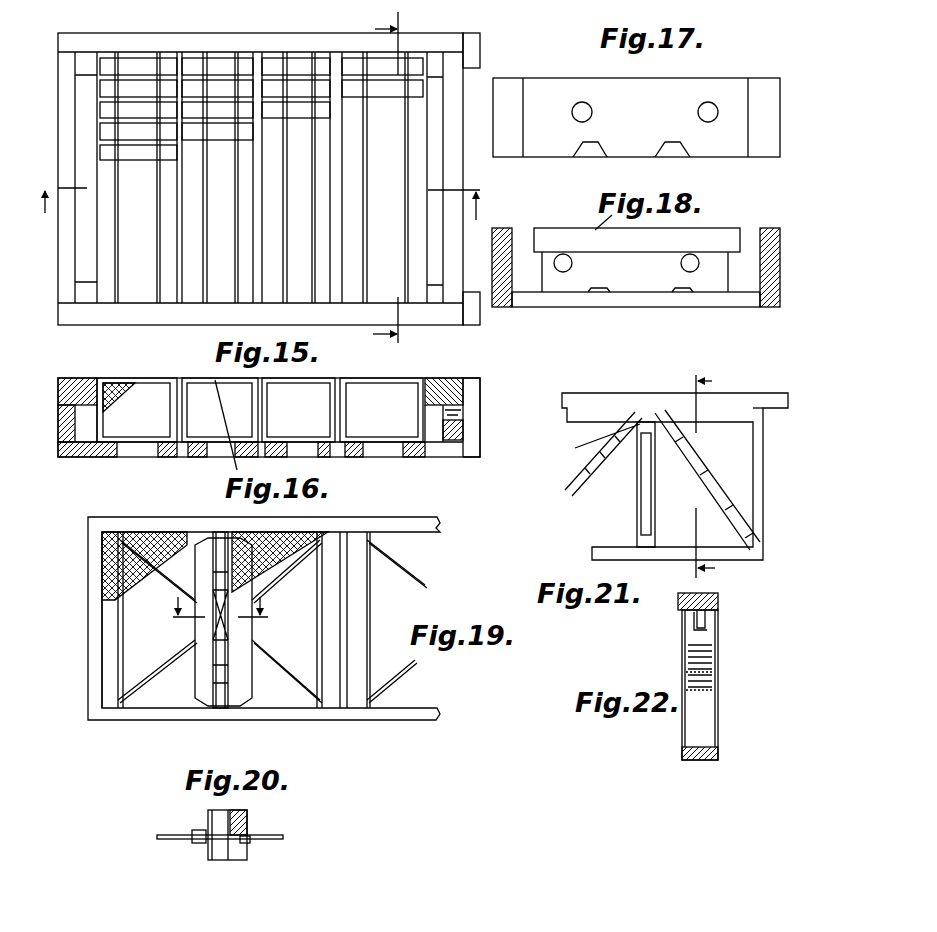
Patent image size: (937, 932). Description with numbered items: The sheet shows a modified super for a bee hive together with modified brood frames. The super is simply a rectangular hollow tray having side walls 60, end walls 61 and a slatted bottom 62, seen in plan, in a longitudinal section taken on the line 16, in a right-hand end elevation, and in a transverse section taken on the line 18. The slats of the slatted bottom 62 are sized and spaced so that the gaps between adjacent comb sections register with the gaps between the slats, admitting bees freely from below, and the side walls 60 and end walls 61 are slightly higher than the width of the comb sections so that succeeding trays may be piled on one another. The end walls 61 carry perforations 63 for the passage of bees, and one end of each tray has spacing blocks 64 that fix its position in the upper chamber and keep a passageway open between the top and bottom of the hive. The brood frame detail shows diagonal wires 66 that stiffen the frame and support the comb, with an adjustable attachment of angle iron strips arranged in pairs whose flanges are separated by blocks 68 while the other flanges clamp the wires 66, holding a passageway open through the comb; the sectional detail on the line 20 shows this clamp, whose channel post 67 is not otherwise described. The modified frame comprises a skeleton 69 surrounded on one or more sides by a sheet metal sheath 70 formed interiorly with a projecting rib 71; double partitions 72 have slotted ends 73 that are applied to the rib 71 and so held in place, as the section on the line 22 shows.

In FIG. 15, the side walls 60 is at (318, 40).
In FIG. 17, the side walls 60 is at (502, 137).
In FIG. 18, the side walls 60 is at (508, 228).
In FIG. 15, the end walls 61 is at (66, 94).
In FIG. 17, the end walls 61 is at (703, 84).
In FIG. 18, the end walls 61 is at (637, 260).
In FIG. 16, the end walls 61 is at (60, 380).
In FIG. 15, the slatted bottom 62 is at (362, 198).
In FIG. 18, the slatted bottom 62 is at (640, 308).
In FIG. 16, the slatted bottom 62 is at (170, 458).
In FIG. 17, the perforations 63 is at (590, 113).
In FIG. 18, the perforations 63 is at (572, 262).
In FIG. 16, the perforations 63 is at (462, 414).
In FIG. 15, the spacing blocks 64 is at (482, 54).
In FIG. 16, the spacing blocks 64 is at (480, 440).
In FIG. 19, the diagonal wires 66 is at (298, 568).
In FIG. 20, the diagonal wires 66 is at (171, 832).
In FIG. 19, the channel post 67 is at (208, 555).
In FIG. 20, the channel post 67 is at (240, 862).
In FIG. 19, the blocks 68 is at (222, 682).
In FIG. 21, the skeleton 69 is at (763, 496).
In FIG. 22, the skeleton 69 is at (720, 600).
In FIG. 22, the sheet metal sheath 70 is at (680, 600).
In FIG. 22, the projecting rib 71 is at (706, 622).
In FIG. 21, the double partitions 72 is at (590, 472).
In FIG. 22, the double partitions 72 is at (705, 660).
In FIG. 22, the slot 73 is at (694, 628).
In FIG. 15, the section line 16— 16 is at (269, 193).
In FIG. 15, the section line 18— 18 is at (390, 183).
In FIG. 19, the section line 20— 20 is at (220, 612).
In FIG. 21, the section line 22— 22 is at (701, 473).